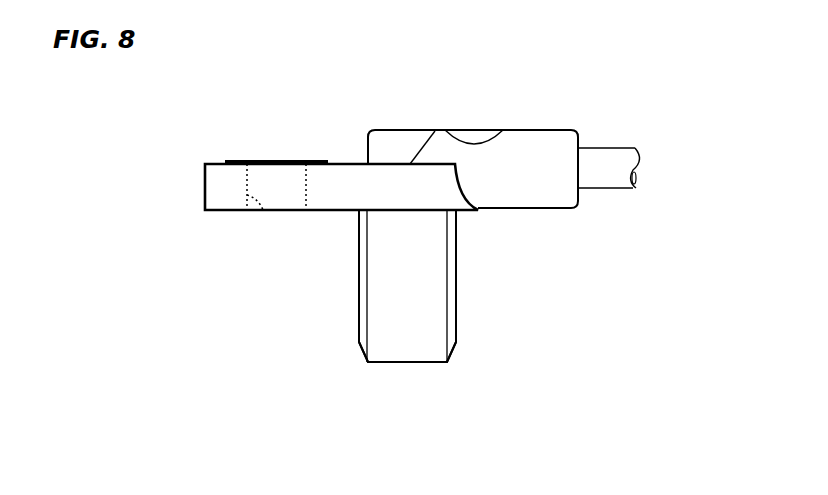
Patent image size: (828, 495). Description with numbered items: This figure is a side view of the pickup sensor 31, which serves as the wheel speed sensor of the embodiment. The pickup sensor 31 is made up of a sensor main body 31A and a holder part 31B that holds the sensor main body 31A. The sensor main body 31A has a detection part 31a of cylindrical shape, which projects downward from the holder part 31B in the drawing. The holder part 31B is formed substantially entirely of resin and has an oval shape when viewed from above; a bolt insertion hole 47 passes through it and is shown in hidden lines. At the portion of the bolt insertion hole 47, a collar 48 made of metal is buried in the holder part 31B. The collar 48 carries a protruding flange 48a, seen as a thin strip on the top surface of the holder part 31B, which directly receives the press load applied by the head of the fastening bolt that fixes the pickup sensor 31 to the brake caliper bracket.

The pickup sensor 31 is at (614, 96).
The sensor main body 31A is at (437, 255).
The detection part 31a is at (408, 348).
The holder part 31B is at (334, 200).
The bolt insertion hole 47 is at (263, 210).
The collar 48 is at (276, 160).
The flange 48a is at (236, 160).